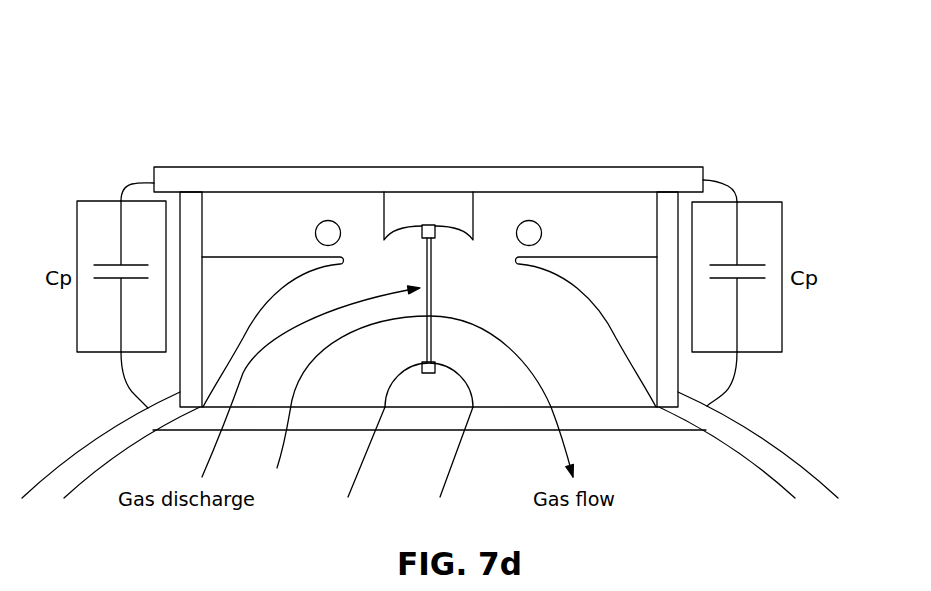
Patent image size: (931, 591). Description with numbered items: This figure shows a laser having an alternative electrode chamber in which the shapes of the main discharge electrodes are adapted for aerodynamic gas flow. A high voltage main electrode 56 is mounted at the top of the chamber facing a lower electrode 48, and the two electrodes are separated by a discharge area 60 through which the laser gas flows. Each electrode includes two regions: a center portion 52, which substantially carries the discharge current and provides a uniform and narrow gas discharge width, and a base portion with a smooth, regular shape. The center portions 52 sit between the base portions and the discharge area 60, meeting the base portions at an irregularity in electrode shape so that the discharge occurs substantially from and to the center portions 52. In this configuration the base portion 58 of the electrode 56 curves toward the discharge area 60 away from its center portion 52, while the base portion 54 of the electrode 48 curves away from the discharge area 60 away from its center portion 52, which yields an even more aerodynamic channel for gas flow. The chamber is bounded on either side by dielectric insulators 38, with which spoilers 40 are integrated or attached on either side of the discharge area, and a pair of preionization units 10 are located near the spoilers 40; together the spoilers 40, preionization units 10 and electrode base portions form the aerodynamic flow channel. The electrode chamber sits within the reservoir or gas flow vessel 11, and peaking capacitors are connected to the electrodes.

The dielectric insulators 38 is at (192, 210).
The spoilers 40 is at (612, 285).
The preionization units 10 is at (338, 216).
The reservoir (gas flow vessel) 11 is at (757, 452).
The high voltage main electrode 56 is at (428, 232).
The base portion 58 is at (403, 234).
The center portion 52 is at (436, 238).
The discharge area 60 is at (458, 308).
The electrode 48 is at (431, 430).
The base portion 54 is at (468, 388).